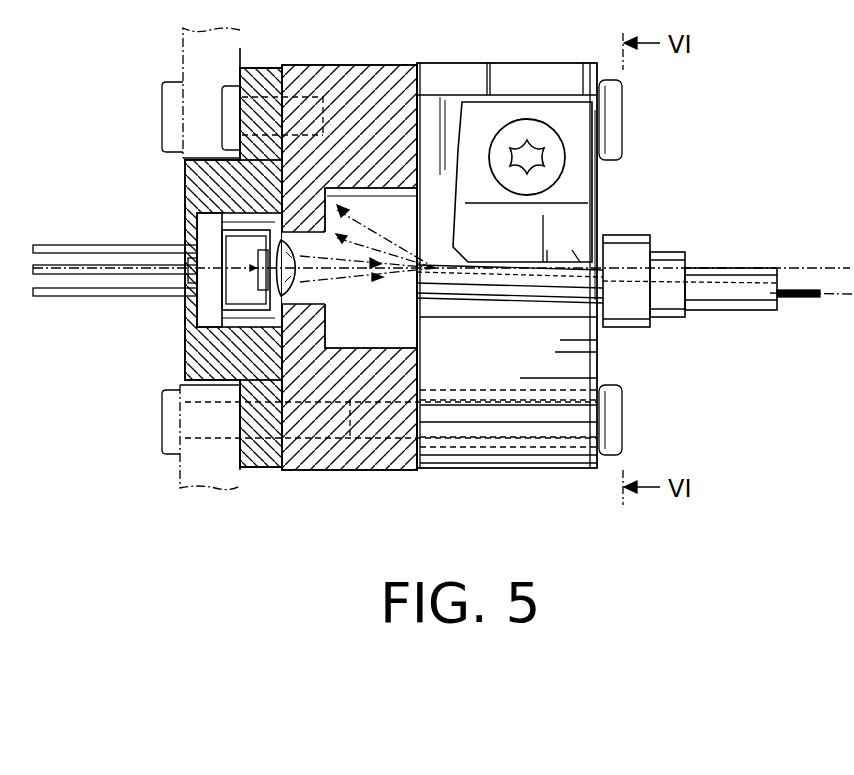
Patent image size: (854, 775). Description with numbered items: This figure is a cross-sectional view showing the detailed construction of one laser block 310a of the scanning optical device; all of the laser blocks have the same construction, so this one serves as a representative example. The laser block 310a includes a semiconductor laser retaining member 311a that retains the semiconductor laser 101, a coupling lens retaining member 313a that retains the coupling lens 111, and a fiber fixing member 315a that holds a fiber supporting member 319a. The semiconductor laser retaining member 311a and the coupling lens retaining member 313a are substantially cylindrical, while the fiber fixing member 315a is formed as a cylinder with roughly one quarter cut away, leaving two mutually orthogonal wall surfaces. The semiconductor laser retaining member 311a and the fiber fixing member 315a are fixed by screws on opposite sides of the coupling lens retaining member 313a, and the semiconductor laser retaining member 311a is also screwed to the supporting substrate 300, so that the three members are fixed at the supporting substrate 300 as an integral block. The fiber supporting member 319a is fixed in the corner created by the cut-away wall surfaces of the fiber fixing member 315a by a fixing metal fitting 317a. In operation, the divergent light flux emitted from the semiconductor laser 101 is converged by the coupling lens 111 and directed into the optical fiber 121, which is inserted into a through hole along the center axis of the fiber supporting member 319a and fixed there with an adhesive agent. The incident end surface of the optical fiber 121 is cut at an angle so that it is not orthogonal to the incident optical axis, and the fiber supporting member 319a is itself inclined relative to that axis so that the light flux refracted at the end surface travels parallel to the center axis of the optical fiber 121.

The supporting substrate 300 is at (240, 46).
The semiconductor laser 101 is at (208, 237).
The coupling lens 111 is at (304, 278).
The semiconductor laser retaining member 311a is at (197, 357).
The coupling lens retaining member 313a is at (323, 460).
The laser block 310a is at (422, 482).
The fiber fixing member 315a is at (527, 458).
The fixing metal fitting 317a is at (570, 228).
The fiber supporting member 319a is at (712, 310).
The optical fiber 121 is at (803, 298).